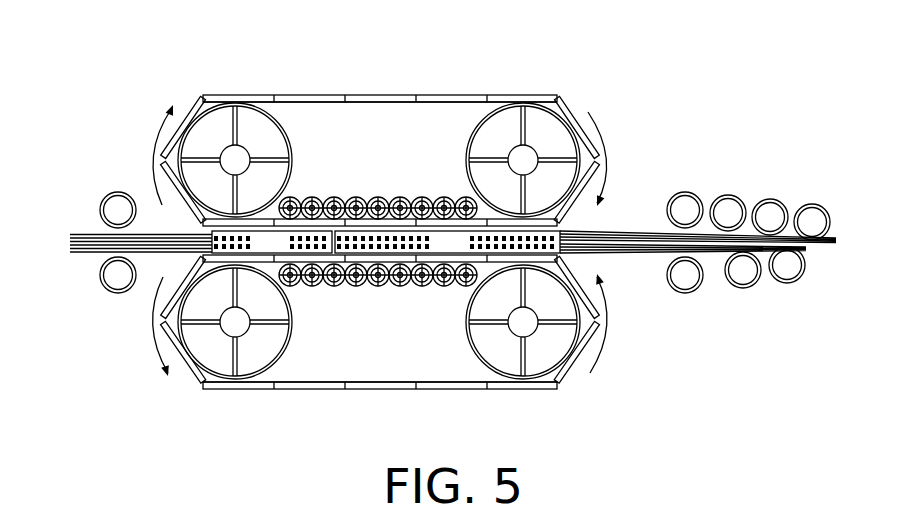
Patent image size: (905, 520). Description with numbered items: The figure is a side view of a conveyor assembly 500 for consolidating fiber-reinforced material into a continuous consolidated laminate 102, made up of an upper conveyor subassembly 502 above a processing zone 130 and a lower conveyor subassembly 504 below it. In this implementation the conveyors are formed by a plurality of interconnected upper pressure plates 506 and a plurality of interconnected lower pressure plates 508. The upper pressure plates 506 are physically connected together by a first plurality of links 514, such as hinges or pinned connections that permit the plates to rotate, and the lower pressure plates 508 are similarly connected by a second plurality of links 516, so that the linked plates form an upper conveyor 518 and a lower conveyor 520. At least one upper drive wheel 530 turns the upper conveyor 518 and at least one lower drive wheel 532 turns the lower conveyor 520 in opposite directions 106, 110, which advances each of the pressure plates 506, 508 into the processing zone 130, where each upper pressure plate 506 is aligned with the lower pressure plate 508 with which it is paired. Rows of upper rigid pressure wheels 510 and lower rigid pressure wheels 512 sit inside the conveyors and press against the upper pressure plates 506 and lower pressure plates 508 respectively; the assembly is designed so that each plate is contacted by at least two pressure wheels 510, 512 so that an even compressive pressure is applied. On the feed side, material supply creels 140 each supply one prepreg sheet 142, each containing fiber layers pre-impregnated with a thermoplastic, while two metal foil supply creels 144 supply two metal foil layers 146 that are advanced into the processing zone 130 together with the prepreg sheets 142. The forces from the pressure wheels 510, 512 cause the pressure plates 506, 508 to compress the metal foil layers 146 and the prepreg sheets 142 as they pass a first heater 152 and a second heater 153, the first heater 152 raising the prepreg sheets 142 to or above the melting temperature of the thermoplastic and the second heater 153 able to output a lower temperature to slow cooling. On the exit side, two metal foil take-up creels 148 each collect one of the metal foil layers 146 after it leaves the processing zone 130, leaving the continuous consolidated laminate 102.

The conveyor assembly 500 is at (110, 63).
The upper conveyor subassembly 502 is at (262, 70).
The lower conveyor subassembly 504 is at (256, 416).
The upper pressure plates 506 is at (340, 93).
The lower pressure plates 508 is at (305, 392).
The upper rigid pressure wheels 510 is at (400, 197).
The lower rigid pressure wheels 512 is at (400, 287).
The first plurality of links 514 is at (347, 105).
The second plurality of links 516 is at (345, 381).
The upper conveyor 518 is at (436, 57).
The lower conveyor 520 is at (520, 416).
The upper drive wheel 530 is at (291, 140).
The lower drive wheel 532 is at (291, 344).
The direction 106 is at (152, 135).
The direction 110 is at (155, 350).
The continuous consolidated laminate 102 is at (88, 261).
The processing zone 130 is at (606, 170).
The material supply creels 140 is at (771, 207).
The prepreg sheets 142 is at (715, 310).
The metal foil supply creels 144 is at (685, 203).
The metal foil layers 146 is at (600, 243).
The metal foil take-up creels 148 is at (112, 205).
The first heater 152 is at (447, 241).
The second heater 153 is at (272, 243).